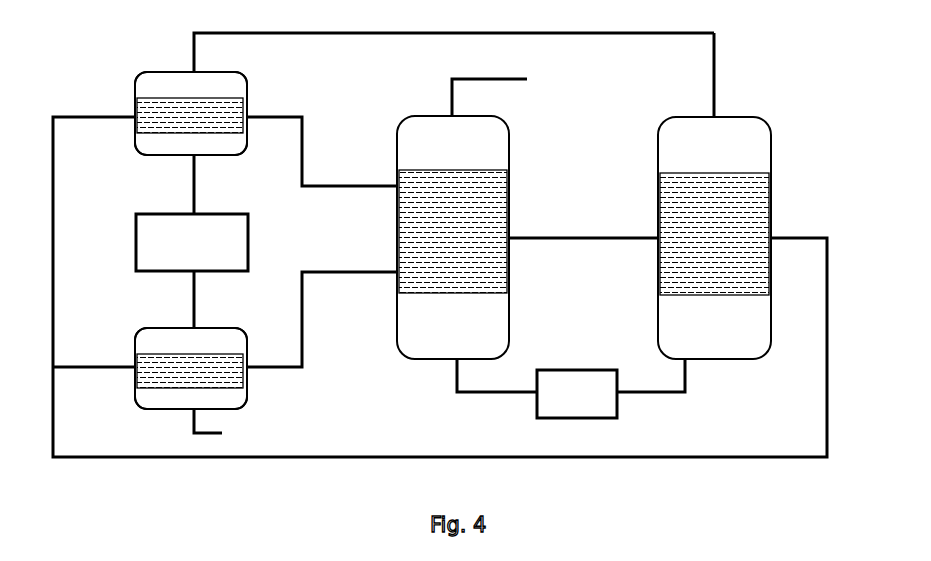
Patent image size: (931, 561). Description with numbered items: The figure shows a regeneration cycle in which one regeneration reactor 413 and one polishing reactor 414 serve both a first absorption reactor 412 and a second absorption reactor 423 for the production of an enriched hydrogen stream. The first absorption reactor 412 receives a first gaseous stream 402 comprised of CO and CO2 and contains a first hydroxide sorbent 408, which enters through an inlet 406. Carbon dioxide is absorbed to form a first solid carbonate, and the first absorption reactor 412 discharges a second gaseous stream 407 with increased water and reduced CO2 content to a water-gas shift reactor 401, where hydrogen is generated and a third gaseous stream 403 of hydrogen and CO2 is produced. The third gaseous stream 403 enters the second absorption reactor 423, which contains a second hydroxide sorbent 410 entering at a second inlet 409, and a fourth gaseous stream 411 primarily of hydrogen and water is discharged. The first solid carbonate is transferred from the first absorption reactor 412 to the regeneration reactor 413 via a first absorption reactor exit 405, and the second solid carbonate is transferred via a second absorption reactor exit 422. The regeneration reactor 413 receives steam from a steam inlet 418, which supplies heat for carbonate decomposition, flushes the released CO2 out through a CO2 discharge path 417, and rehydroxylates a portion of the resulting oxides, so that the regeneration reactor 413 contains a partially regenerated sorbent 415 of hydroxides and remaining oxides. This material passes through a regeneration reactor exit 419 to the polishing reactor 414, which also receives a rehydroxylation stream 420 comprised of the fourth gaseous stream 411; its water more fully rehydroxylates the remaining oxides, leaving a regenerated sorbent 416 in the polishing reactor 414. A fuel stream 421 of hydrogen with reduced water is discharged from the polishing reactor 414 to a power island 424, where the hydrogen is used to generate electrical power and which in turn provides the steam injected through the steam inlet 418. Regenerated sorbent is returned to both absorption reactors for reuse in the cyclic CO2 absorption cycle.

The water-gas shift reactor 401 is at (192, 242).
The first gaseous stream 402 is at (188, 420).
The third gaseous stream 403 is at (188, 170).
The first absorption reactor exit 405 is at (267, 370).
The inlet 406 is at (110, 365).
The second gaseous stream 407 is at (188, 307).
The first hydroxide sorbent 408 is at (162, 365).
The second inlet 409 is at (110, 114).
The second hydroxide sorbent 410 is at (162, 115).
The fourth gaseous stream 411 is at (193, 39).
The first absorption reactor 412 is at (225, 398).
The regeneration reactor 413 is at (493, 333).
The polishing reactor 414 is at (740, 350).
The partially regenerated sorbent 415 is at (421, 189).
The regenerated sorbent 416 is at (678, 187).
The CO2 discharge path 417 is at (485, 78).
The steam inlet 418 is at (475, 393).
The regeneration reactor exit 419 is at (552, 235).
The rehydroxylation stream 420 is at (713, 82).
The fuel stream 421 is at (669, 393).
The second absorption reactor exit 422 is at (268, 112).
The second absorption reactor 423 is at (229, 146).
The power island 424 is at (818, 220).